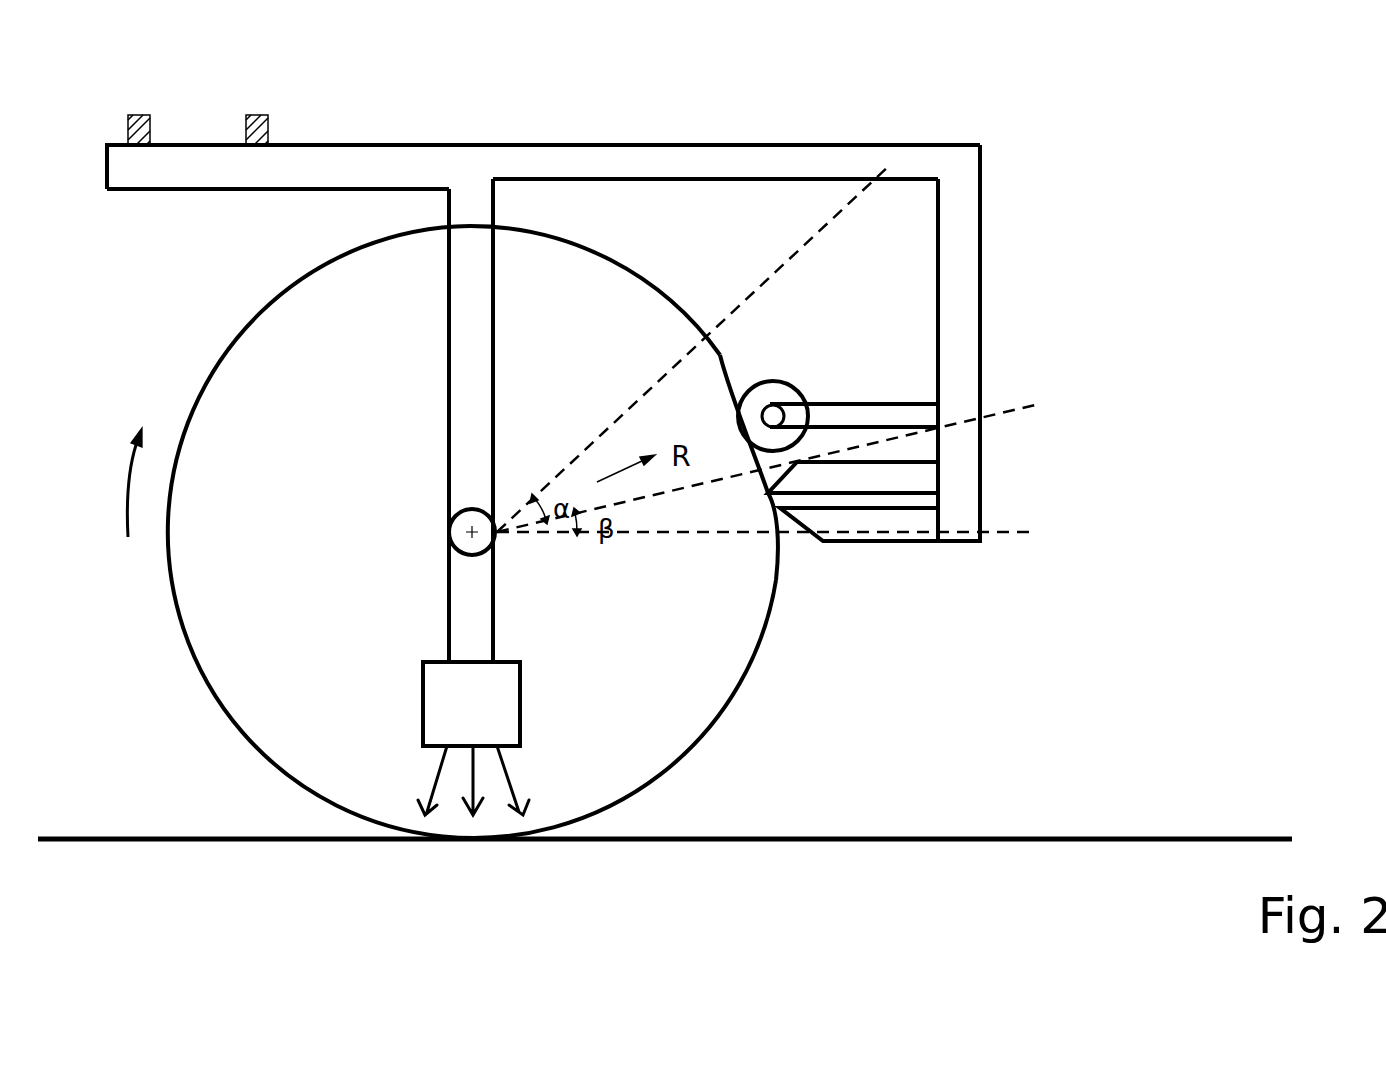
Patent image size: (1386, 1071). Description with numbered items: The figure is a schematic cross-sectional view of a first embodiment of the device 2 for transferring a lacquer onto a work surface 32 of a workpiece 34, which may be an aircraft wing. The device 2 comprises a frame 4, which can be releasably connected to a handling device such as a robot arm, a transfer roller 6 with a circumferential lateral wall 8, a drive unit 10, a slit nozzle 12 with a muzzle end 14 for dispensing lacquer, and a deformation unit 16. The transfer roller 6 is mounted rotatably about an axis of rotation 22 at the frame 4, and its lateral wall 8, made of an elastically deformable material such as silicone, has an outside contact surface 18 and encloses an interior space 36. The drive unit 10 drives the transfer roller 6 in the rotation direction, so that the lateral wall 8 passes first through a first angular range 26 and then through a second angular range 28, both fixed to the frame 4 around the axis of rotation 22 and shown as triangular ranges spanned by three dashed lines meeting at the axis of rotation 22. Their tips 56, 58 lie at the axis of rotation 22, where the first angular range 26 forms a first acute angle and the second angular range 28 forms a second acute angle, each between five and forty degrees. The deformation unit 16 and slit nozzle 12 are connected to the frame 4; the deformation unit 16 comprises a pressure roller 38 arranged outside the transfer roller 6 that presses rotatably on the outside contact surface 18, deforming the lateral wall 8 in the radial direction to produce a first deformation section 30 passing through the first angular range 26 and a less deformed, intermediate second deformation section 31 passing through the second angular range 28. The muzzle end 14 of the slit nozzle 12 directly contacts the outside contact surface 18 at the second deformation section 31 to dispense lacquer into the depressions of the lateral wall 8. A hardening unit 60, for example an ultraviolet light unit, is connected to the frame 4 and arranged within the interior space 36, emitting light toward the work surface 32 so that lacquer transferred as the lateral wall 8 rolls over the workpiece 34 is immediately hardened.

The device 2 is at (776, 110).
The frame 4 is at (563, 162).
The transfer roller 6 is at (197, 327).
The lateral wall 8 is at (269, 276).
The drive unit 10 is at (463, 572).
The slit nozzle 12 is at (892, 570).
The muzzle end 14 is at (804, 480).
The deformation unit 16 is at (819, 355).
The outside contact surface 18 is at (679, 281).
The axis of rotation 22 is at (455, 537).
The first angular range 26 is at (890, 244).
The second angular range 28 is at (1030, 426).
The first deformation section 30 is at (746, 369).
The second deformation section 31 is at (752, 512).
The work surface 32 is at (958, 816).
The workpiece 34 is at (1065, 816).
The interior space 36 is at (356, 424).
The pressure roller 38 is at (817, 385).
The tip end of the first angular range 56 is at (513, 488).
The tip end of the second angular range 58 is at (528, 553).
The hardening unit 60 is at (457, 719).